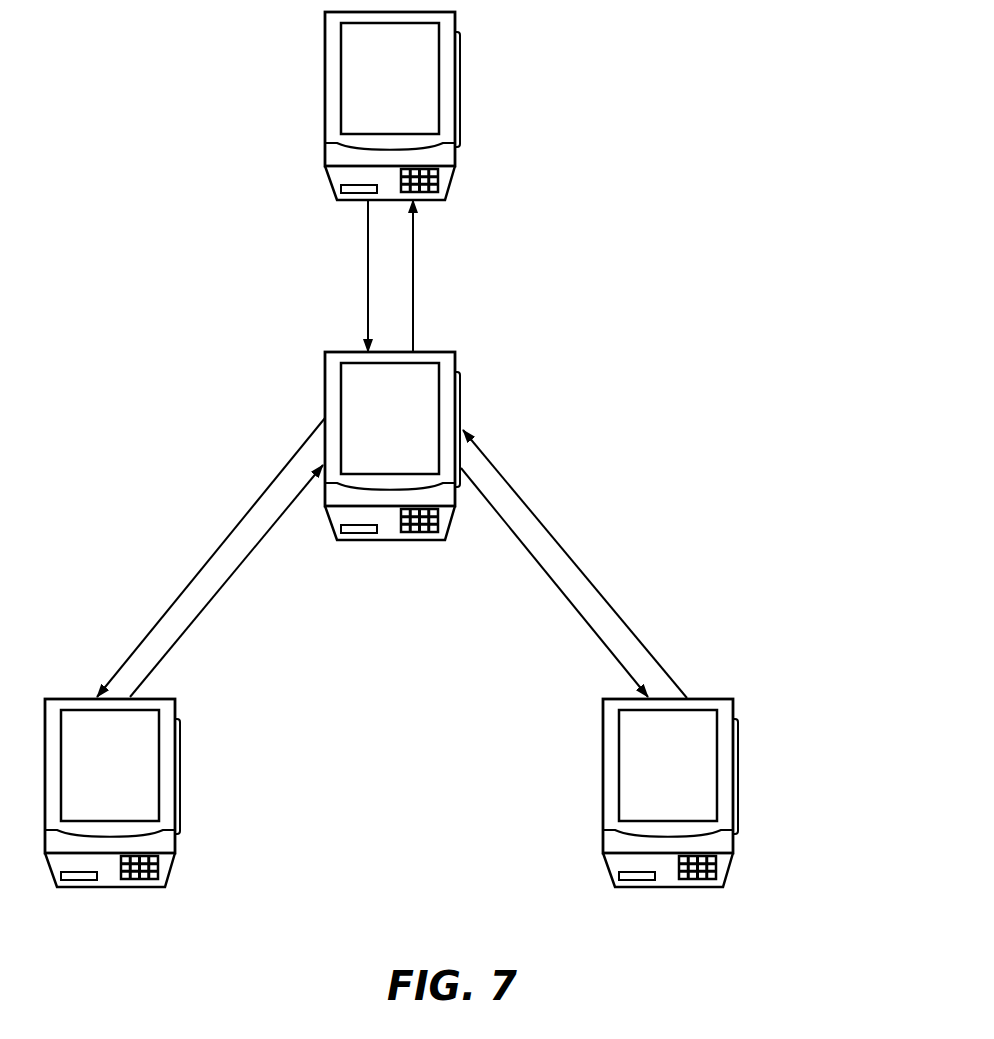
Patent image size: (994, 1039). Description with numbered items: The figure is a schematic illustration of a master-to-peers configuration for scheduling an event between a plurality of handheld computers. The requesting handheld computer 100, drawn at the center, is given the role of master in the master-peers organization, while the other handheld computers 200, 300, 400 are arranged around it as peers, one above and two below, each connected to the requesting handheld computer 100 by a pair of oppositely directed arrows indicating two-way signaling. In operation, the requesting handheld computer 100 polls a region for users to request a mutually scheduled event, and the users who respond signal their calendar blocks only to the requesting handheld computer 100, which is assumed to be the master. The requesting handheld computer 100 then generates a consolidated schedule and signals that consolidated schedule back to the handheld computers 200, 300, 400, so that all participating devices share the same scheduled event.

The requesting handheld computer 100 is at (480, 446).
The handheld computer 200 is at (481, 106).
The handheld computer 300 is at (201, 793).
The handheld computer 400 is at (759, 793).